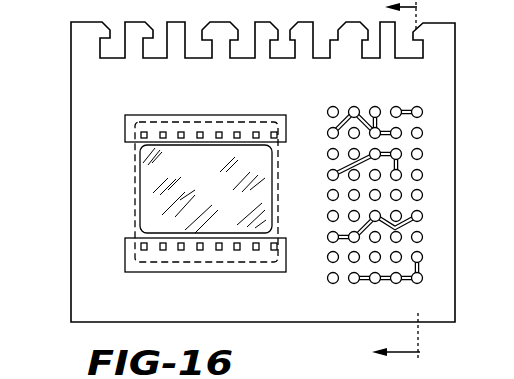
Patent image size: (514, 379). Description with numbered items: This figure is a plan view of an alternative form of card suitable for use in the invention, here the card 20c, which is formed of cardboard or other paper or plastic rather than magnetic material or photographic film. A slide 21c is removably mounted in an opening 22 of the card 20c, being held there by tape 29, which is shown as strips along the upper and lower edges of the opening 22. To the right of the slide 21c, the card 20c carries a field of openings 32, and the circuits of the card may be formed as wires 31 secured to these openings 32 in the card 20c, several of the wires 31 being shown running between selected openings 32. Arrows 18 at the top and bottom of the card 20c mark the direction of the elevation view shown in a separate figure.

The card 20c is at (63, 164).
The arrows 18— 18 is at (407, 188).
The tape 29 is at (125, 121).
The opening 22 is at (140, 212).
The slide 21c is at (214, 190).
The wires 31 is at (386, 287).
The openings 32 is at (423, 176).